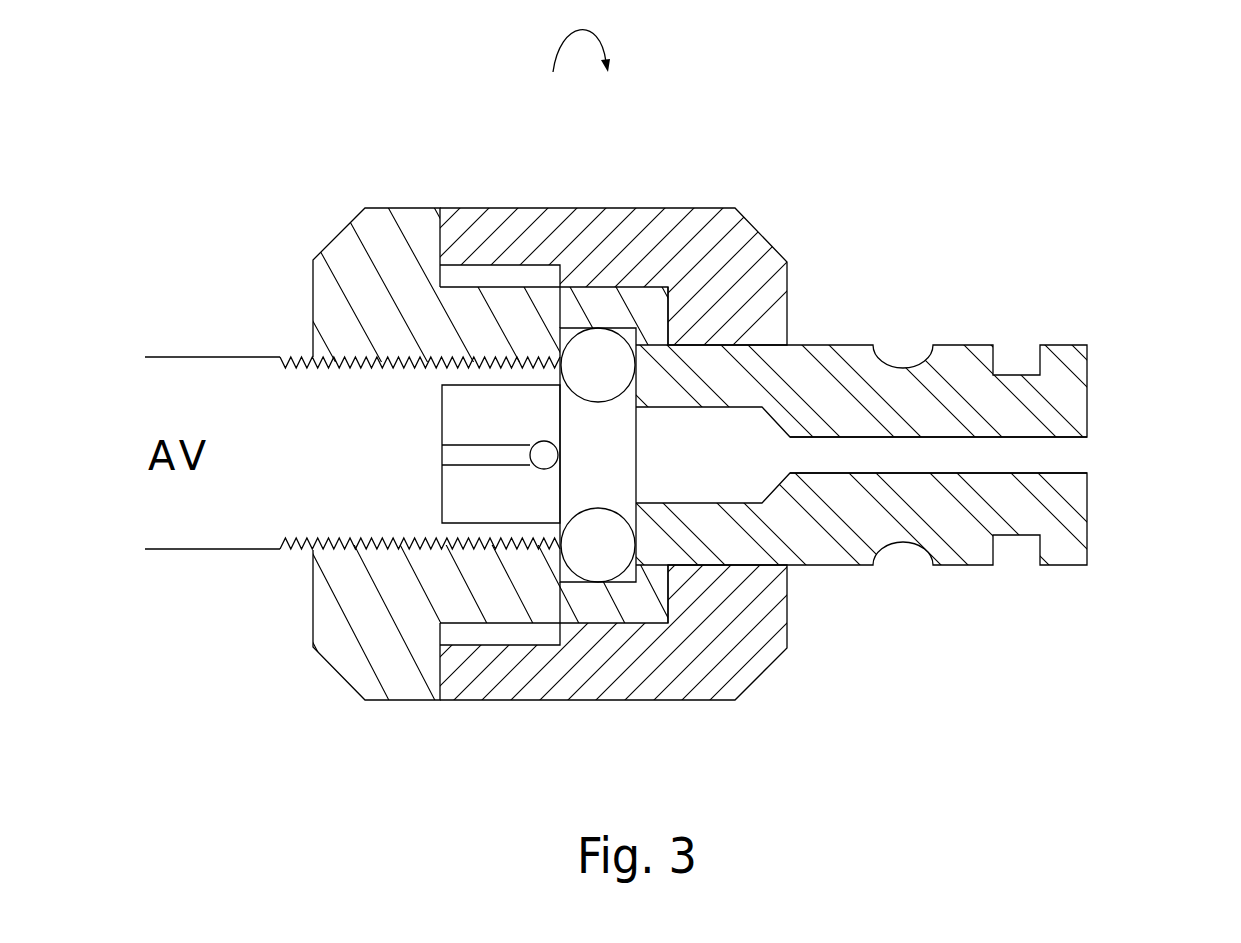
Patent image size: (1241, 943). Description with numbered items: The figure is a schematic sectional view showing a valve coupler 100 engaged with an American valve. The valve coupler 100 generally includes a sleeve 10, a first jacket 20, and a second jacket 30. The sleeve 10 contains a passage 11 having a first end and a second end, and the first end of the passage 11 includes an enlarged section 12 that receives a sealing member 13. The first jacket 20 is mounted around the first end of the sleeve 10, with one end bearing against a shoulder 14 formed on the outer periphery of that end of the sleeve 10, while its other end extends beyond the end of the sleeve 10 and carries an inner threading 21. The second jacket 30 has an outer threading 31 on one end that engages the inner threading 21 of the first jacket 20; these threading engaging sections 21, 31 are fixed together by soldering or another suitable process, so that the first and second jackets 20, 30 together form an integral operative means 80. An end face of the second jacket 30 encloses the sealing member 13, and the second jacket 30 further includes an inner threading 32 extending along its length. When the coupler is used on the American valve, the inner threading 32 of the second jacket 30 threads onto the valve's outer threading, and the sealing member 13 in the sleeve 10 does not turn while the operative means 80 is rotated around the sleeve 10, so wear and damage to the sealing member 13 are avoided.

The valve coupler 100 is at (857, 308).
The sleeve 10 is at (836, 555).
The passage 11 is at (1068, 455).
The enlarged section 12 is at (567, 337).
The sealing member 13 is at (596, 358).
The shoulder 14 is at (668, 299).
The first jacket 20 is at (762, 262).
The inner threading 21 is at (470, 265).
The second jacket 30 is at (413, 690).
The outer threading 31 is at (505, 647).
The inner threading 32 is at (358, 550).
The operative means 80 is at (450, 200).